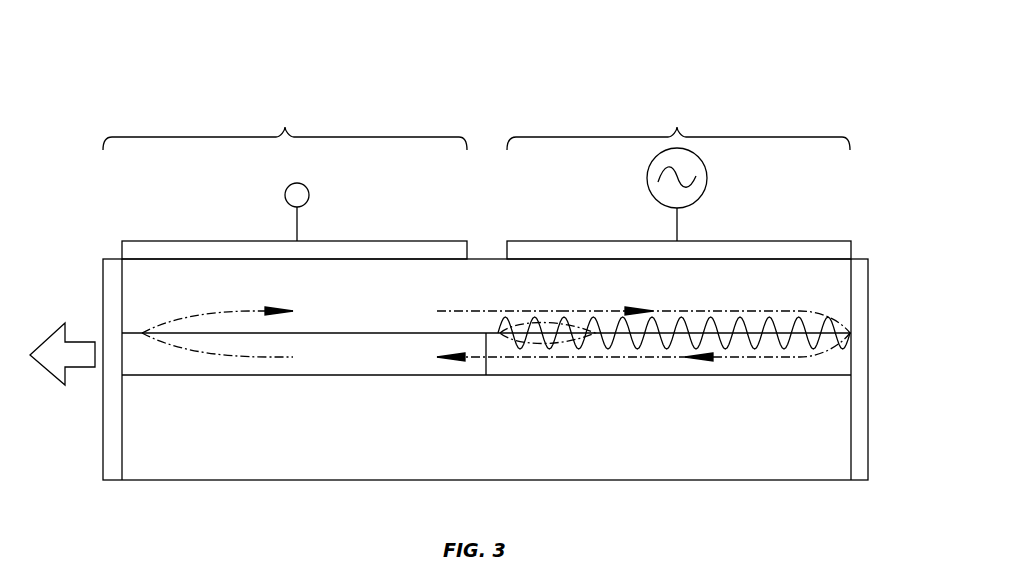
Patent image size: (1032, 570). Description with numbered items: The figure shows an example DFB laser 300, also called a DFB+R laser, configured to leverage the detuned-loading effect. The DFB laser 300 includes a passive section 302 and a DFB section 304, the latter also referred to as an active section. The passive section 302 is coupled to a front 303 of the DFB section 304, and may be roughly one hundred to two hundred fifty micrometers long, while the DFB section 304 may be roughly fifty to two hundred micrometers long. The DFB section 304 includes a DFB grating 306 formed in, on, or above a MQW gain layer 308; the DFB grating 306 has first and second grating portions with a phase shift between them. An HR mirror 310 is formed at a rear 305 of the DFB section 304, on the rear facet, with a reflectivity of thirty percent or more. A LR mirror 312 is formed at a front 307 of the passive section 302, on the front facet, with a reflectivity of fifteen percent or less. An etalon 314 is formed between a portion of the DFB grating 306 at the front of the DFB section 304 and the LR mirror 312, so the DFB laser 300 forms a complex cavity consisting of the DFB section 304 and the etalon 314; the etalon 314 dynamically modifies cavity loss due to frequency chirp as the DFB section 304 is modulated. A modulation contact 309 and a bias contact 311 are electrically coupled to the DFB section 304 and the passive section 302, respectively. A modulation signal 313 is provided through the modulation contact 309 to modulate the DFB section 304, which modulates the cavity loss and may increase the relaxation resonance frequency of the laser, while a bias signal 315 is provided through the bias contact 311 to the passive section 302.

The DFB laser 300 is at (850, 53).
The passive section 302 is at (285, 127).
The front of the DFB section 303 is at (492, 239).
The DFB section 304 is at (678, 127).
The rear of the DFB section 305 is at (862, 238).
The DFB grating 306 is at (790, 322).
The front of the passive section 307 is at (119, 251).
The MQW gain layer 308 is at (835, 376).
The modulation contact 309 is at (517, 241).
The HR mirror 310 is at (869, 300).
The bias contact 311 is at (145, 241).
The LR mirror 312 is at (103, 299).
The modulation signal 313 is at (652, 196).
The etalon 314 is at (270, 445).
The bias signal 315 is at (287, 200).